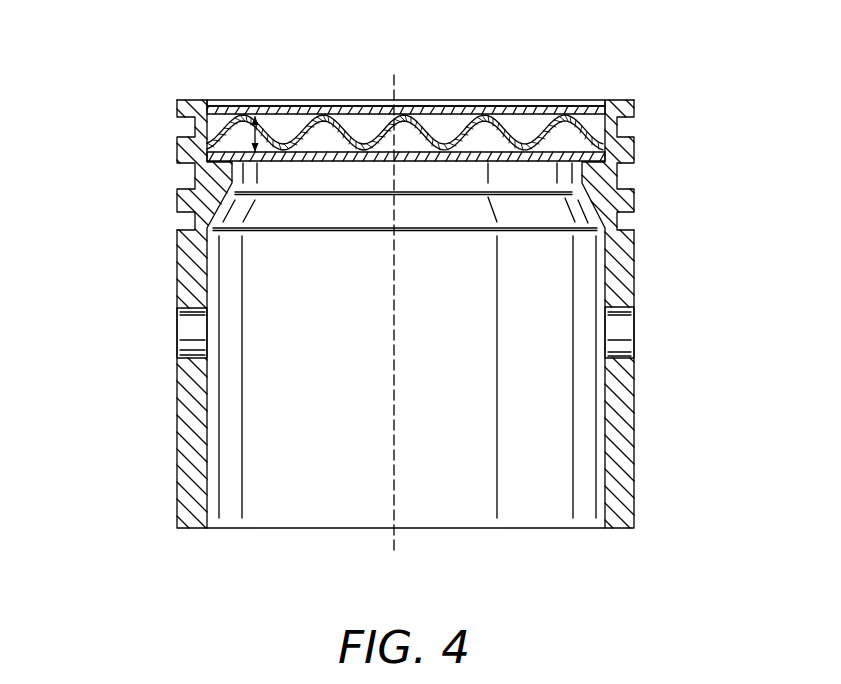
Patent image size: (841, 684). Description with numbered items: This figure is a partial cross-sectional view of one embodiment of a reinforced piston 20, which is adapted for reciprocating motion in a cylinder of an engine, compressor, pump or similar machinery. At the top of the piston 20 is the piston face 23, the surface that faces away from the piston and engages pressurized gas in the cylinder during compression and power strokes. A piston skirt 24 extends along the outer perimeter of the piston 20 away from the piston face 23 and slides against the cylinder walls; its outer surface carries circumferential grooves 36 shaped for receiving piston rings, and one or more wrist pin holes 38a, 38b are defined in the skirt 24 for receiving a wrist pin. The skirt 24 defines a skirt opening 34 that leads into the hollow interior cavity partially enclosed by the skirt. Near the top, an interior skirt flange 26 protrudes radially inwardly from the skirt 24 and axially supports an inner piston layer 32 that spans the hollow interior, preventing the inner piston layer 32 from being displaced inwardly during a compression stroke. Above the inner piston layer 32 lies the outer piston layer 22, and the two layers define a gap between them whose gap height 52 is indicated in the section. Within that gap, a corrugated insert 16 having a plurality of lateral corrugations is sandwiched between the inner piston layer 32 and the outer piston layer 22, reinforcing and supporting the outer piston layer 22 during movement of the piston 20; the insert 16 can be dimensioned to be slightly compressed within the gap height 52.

The piston 20 is at (164, 83).
The corrugated insert 16 is at (315, 135).
The outer piston layer 22 is at (527, 110).
The piston face 23 is at (452, 100).
The piston skirt 24 is at (634, 435).
The interior skirt flange 26 is at (232, 180).
The inner piston layer 32 is at (404, 163).
The skirt opening 34 is at (351, 455).
The circumferential grooves 36 is at (173, 124).
The wrist pin hole 38a is at (190, 328).
The wrist pin hole 38b is at (620, 330).
The gap height 52 is at (252, 118).